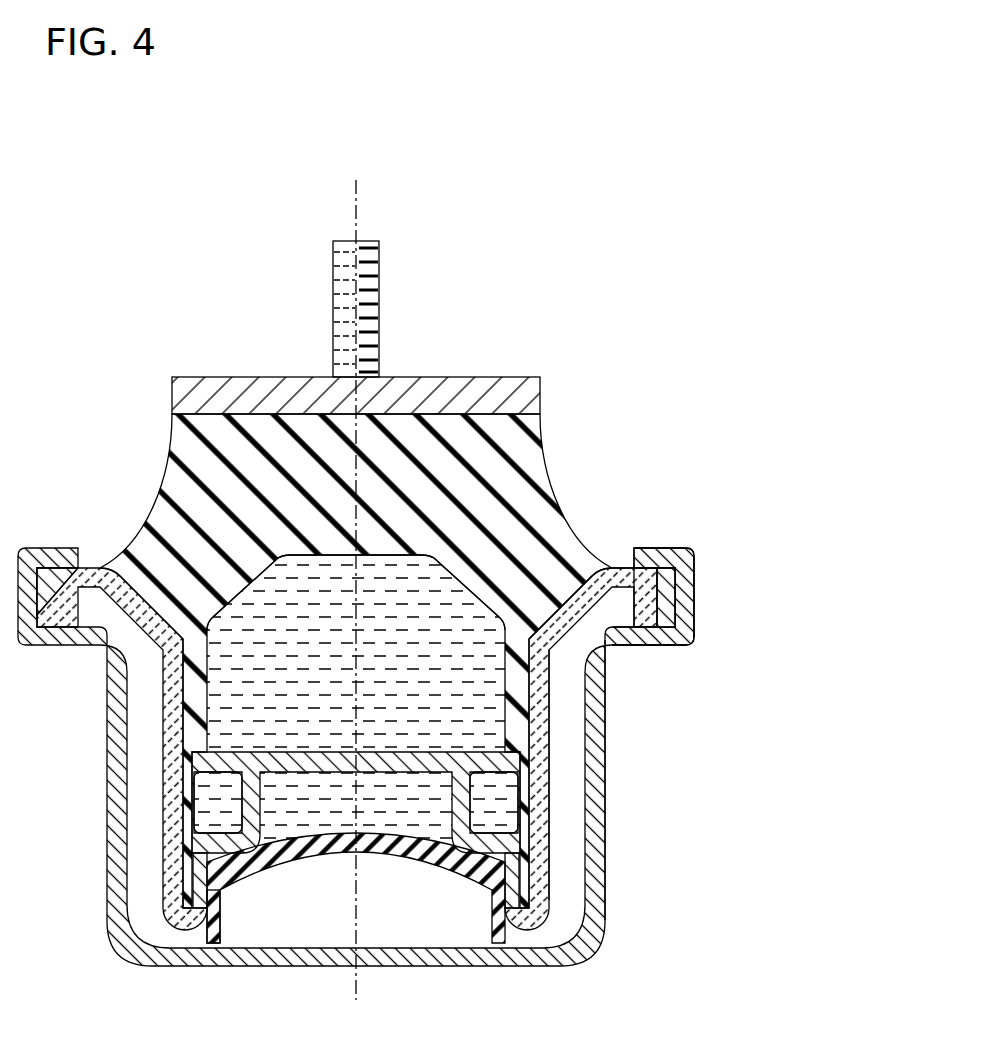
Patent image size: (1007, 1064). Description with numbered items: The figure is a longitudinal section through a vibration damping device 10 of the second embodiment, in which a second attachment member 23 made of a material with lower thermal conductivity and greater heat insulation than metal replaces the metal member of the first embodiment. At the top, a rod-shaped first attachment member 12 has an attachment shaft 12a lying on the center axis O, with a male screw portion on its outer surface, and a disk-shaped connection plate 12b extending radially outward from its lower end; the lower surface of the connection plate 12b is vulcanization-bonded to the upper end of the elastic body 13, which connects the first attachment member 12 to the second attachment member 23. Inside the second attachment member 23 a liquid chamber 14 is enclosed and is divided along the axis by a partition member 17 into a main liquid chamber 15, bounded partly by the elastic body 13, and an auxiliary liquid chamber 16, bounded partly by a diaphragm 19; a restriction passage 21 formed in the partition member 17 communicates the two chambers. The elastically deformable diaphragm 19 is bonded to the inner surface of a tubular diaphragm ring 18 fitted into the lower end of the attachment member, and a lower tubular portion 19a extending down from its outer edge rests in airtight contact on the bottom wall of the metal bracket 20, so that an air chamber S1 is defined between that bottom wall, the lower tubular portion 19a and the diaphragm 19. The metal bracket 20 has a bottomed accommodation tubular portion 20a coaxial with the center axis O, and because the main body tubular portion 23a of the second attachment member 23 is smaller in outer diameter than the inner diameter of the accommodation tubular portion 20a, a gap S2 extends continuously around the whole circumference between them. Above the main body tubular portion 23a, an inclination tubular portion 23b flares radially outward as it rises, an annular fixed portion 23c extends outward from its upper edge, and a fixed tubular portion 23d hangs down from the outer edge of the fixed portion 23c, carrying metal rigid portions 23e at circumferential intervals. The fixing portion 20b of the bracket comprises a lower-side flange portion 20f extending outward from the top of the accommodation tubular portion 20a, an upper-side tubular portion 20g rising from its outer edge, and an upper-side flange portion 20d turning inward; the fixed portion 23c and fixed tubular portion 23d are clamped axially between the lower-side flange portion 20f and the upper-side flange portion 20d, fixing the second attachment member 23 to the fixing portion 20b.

The vibration damping device 10 is at (120, 236).
The center axis O is at (354, 204).
The first attachment member 12 is at (356, 301).
The attachment shaft 12a is at (338, 297).
The connection plate 12b is at (478, 384).
The elastic body 13 is at (396, 634).
The liquid chamber 14 is at (460, 590).
The main liquid chamber 15 is at (330, 664).
The auxiliary liquid chamber 16 is at (330, 817).
The partition member 17 is at (283, 767).
The diaphragm ring 18 is at (202, 870).
The diaphragm 19 is at (356, 936).
The lower tubular portion 19a is at (222, 912).
The metal bracket 20 is at (450, 755).
The accommodation tubular portion 20a is at (597, 825).
The fixing portion 20b is at (835, 511).
The upper-side flange portion 20d is at (657, 551).
The lower-side flange portion 20f is at (663, 640).
The upper-side tubular portion 20g is at (687, 592).
The restriction passage 21 is at (217, 805).
The second attachment member 23 is at (404, 698).
The main body tubular portion 23a is at (540, 715).
The inclination tubular portion 23b is at (578, 612).
The fixed portion 23c is at (628, 568).
The fixed tubular portion 23d is at (650, 608).
The rigid portions 23e is at (673, 580).
The air chamber S1 is at (327, 909).
The gap S2 is at (147, 755).